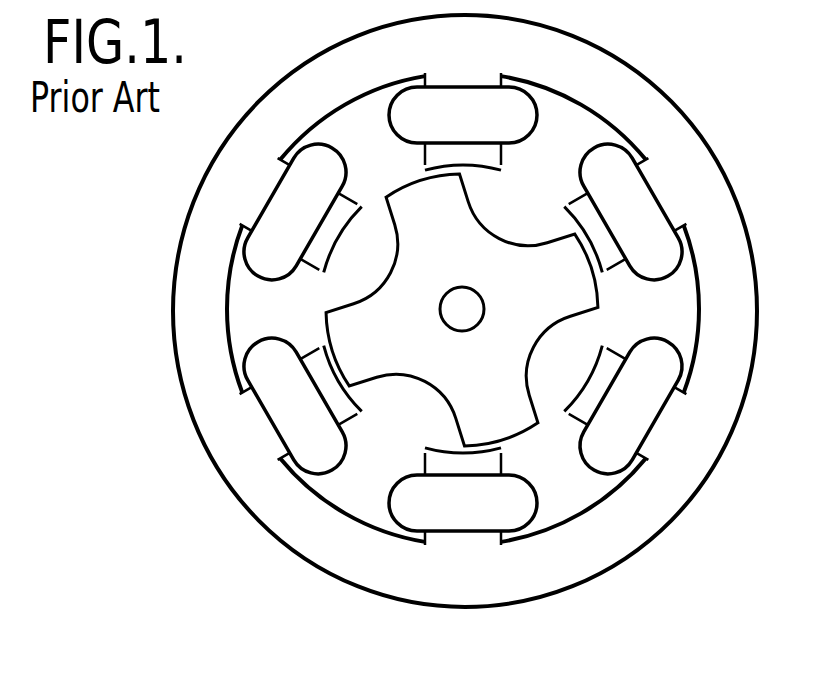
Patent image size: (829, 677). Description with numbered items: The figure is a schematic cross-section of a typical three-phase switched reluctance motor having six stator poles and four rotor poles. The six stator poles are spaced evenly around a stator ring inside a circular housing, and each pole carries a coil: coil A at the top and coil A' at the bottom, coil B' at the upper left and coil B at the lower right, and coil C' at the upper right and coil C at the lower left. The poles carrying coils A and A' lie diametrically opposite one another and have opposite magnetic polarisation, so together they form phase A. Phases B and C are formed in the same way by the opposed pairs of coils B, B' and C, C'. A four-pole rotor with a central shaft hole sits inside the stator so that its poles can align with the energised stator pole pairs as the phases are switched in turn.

The coil A is at (463, 121).
The coil A' is at (463, 496).
The coil B is at (625, 402).
The coil B' is at (301, 215).
The coil C is at (301, 402).
The coil C' is at (625, 215).